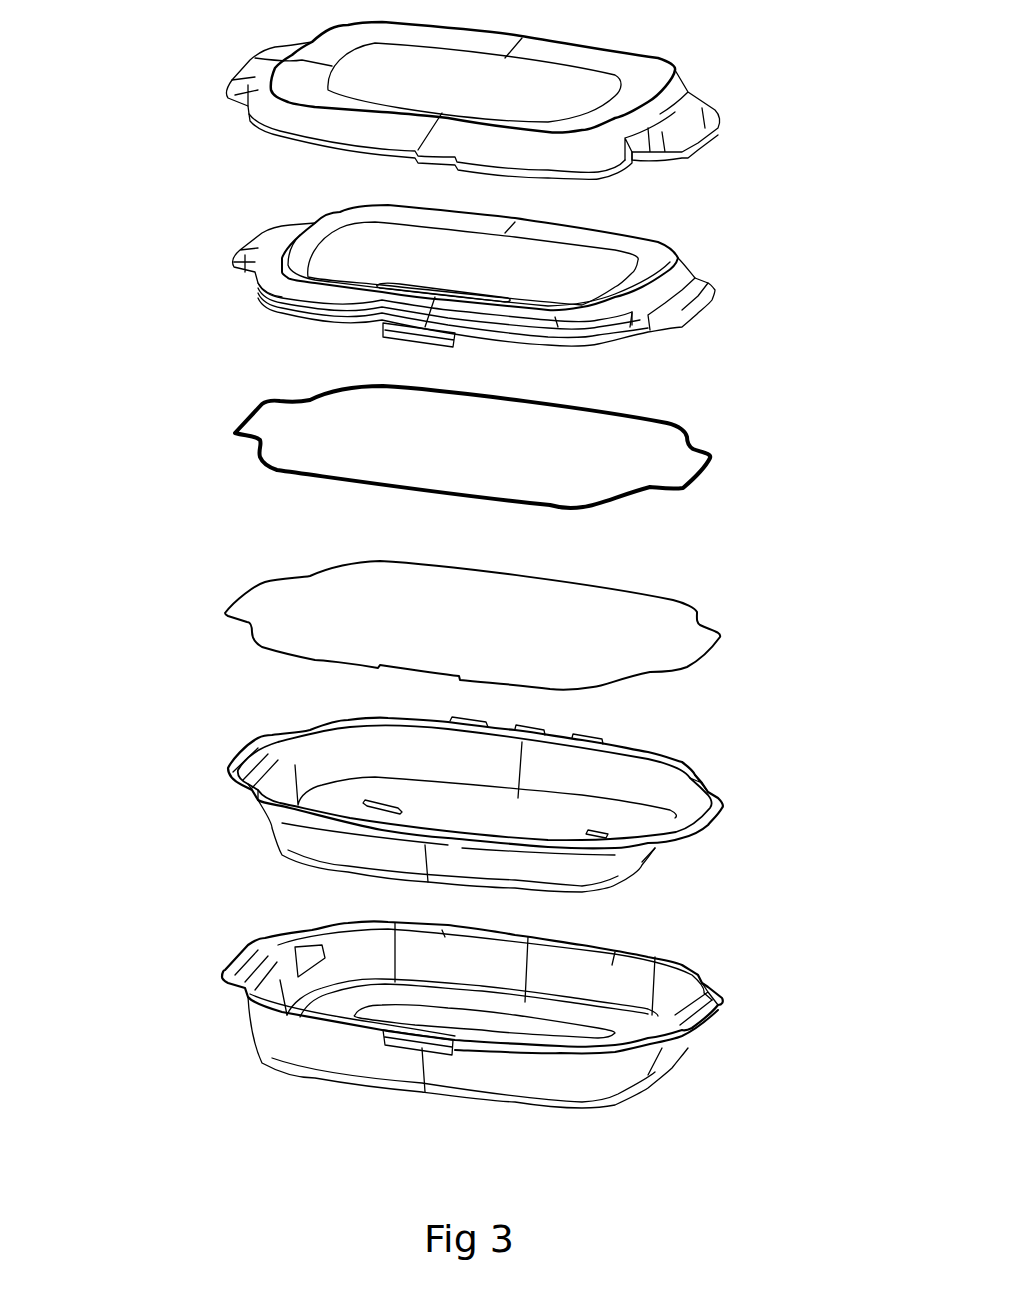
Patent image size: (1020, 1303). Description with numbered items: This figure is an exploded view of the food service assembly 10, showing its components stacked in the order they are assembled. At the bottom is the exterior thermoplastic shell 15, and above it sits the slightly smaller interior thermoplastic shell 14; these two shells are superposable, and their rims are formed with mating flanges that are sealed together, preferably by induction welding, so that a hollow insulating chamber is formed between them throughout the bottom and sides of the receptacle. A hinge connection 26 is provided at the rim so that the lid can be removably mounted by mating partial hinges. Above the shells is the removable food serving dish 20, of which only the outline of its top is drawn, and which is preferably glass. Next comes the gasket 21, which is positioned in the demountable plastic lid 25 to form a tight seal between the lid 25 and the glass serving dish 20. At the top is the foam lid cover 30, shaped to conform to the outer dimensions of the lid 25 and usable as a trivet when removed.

The food service assembly 10 is at (142, 537).
The lid cover 30 is at (680, 78).
The lid 25 is at (673, 267).
The gasket 21 is at (685, 435).
The food serving dish 20 is at (697, 607).
The hinge connection 26 is at (605, 740).
The interior thermoplastic shell 14 is at (638, 856).
The exterior thermoplastic shell 15 is at (640, 1070).